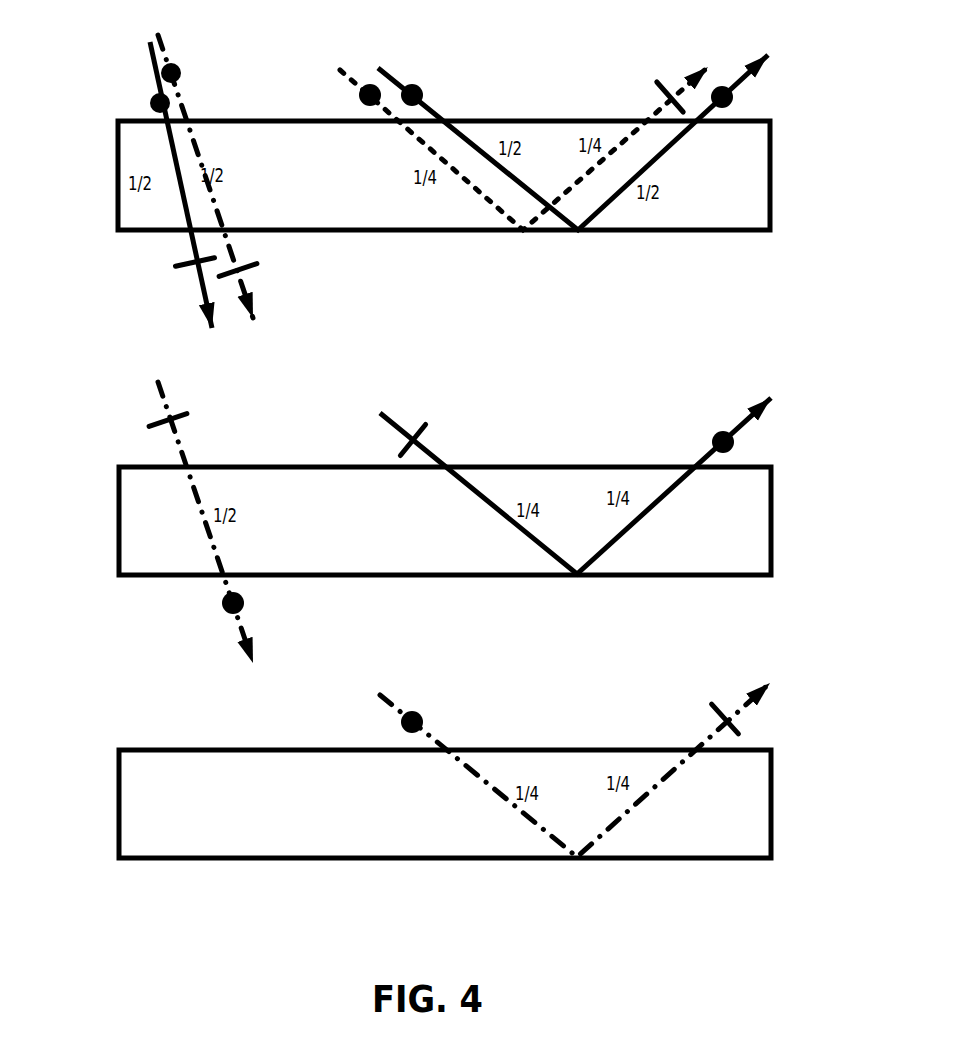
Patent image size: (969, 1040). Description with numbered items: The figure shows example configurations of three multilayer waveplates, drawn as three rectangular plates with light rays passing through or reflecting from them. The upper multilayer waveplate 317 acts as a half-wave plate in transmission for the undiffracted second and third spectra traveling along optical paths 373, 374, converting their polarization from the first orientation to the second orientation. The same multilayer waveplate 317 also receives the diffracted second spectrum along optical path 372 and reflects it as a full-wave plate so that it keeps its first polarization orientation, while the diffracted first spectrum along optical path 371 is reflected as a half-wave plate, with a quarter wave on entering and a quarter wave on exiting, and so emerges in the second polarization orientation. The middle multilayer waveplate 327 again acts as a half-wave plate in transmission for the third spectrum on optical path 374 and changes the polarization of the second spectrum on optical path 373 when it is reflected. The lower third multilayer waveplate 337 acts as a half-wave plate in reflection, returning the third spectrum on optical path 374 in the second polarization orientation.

The multilayer waveplate 317 is at (118, 121).
The multilayer waveplate 327 is at (119, 467).
The third multilayer waveplate 337 is at (119, 750).
The optical path 371 is at (493, 203).
The optical path 372 is at (670, 143).
The optical path 373 is at (153, 62).
The optical path 374 is at (168, 48).